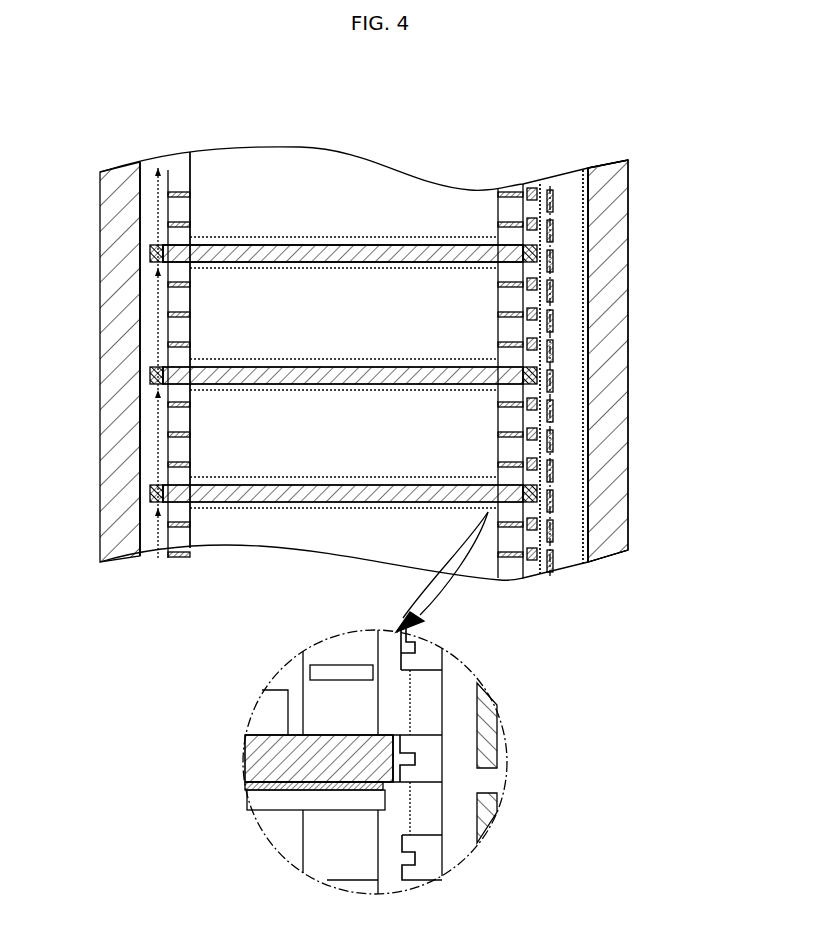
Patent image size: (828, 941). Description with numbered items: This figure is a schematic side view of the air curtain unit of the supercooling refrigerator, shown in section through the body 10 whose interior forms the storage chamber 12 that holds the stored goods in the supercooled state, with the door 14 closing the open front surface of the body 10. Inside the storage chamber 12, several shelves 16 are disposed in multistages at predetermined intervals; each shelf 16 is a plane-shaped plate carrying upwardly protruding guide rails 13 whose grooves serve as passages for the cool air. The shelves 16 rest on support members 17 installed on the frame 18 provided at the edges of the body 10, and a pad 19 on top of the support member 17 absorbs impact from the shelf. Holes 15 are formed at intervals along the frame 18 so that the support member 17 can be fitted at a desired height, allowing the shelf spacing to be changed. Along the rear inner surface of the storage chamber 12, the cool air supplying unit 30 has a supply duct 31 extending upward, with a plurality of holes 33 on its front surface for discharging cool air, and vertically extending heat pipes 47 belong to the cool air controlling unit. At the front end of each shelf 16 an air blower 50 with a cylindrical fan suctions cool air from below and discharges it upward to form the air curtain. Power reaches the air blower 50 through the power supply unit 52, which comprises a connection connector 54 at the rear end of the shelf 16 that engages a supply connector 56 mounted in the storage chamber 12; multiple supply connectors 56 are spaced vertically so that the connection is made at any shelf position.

The body 10 is at (612, 292).
The storage chamber 12 is at (268, 185).
The guide rails 13 is at (352, 240).
The door 14 is at (112, 306).
The holes 15 is at (517, 200).
The shelves 16 is at (220, 240).
The support member 17 is at (292, 803).
The frame 18 is at (490, 205).
The pad 19 is at (262, 790).
The cool air supplying unit 30 is at (566, 487).
The supply duct 31 is at (567, 332).
The holes 33 is at (553, 205).
The heat pipes 47 is at (590, 378).
The air blower 50 is at (150, 254).
The power supply unit 52 is at (548, 496).
The connection connector 54 is at (483, 700).
The supply connector 56 is at (444, 770).